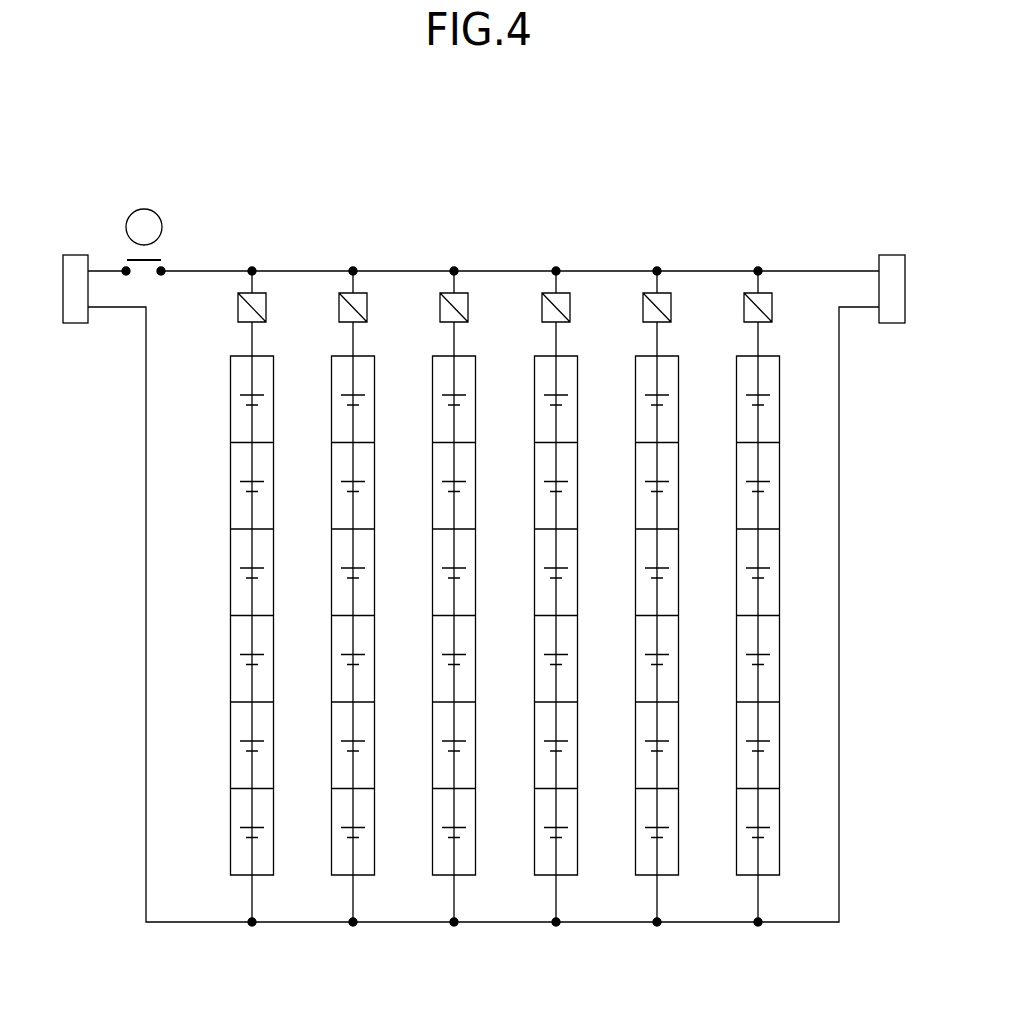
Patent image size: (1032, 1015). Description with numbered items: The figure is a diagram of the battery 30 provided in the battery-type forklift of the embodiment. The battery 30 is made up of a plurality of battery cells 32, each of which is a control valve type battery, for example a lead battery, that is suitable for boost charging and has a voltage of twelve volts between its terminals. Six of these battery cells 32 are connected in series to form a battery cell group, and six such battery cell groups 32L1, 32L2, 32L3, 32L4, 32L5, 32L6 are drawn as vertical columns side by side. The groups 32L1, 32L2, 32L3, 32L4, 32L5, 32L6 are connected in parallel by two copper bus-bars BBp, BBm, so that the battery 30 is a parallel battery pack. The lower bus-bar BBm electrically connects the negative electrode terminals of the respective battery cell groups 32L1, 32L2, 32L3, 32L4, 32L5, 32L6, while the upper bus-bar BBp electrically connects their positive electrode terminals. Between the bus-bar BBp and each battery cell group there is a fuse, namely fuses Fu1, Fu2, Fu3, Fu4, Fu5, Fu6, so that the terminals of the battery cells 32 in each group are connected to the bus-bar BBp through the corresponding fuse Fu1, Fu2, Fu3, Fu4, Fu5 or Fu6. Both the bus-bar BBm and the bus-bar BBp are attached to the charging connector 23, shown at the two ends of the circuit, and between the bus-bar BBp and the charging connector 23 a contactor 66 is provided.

The battery 30 is at (173, 180).
The charging connector 23 is at (72, 324).
The contactor 66 is at (121, 252).
The bus-bar BBp is at (862, 270).
The bus-bar BBm is at (707, 923).
The fuse Fu1 is at (239, 294).
The fuse Fu2 is at (340, 294).
The fuse Fu3 is at (441, 294).
The fuse Fu4 is at (543, 294).
The fuse Fu5 is at (644, 294).
The fuse Fu6 is at (745, 294).
The battery cell group 32L1 is at (244, 573).
The battery cell group 32L2 is at (373, 345).
The battery cell group 32L3 is at (474, 345).
The battery cell group 32L4 is at (576, 345).
The battery cell group 32L5 is at (677, 345).
The battery cell group 32L6 is at (778, 345).
The battery cell 32 is at (230, 398).